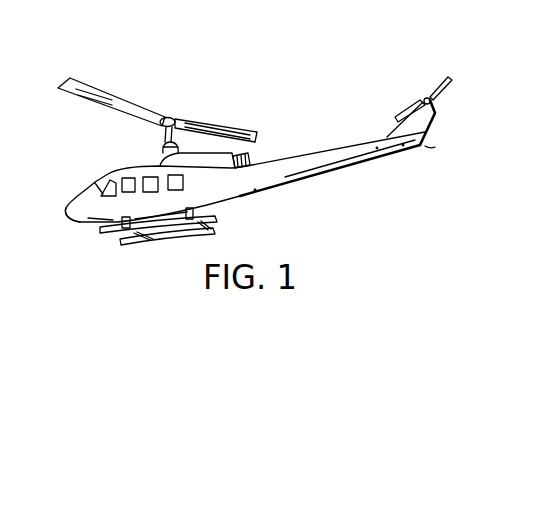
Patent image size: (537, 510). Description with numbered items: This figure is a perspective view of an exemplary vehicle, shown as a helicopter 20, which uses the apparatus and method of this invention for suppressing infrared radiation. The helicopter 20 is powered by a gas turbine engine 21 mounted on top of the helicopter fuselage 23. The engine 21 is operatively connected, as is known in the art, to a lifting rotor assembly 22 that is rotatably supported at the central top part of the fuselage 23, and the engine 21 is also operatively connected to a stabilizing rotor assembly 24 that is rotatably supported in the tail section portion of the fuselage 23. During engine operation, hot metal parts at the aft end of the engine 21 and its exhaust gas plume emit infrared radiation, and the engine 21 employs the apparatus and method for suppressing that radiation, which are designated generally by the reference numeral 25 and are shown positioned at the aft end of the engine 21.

The helicopter 20 is at (291, 127).
The gas turbine engine 21 is at (208, 153).
The lifting rotor assembly 22 is at (114, 95).
The helicopter fuselage 23 is at (228, 187).
The stabilizing rotor assembly 24 is at (446, 115).
The apparatus for suppressing infrared radiation 25 is at (257, 152).